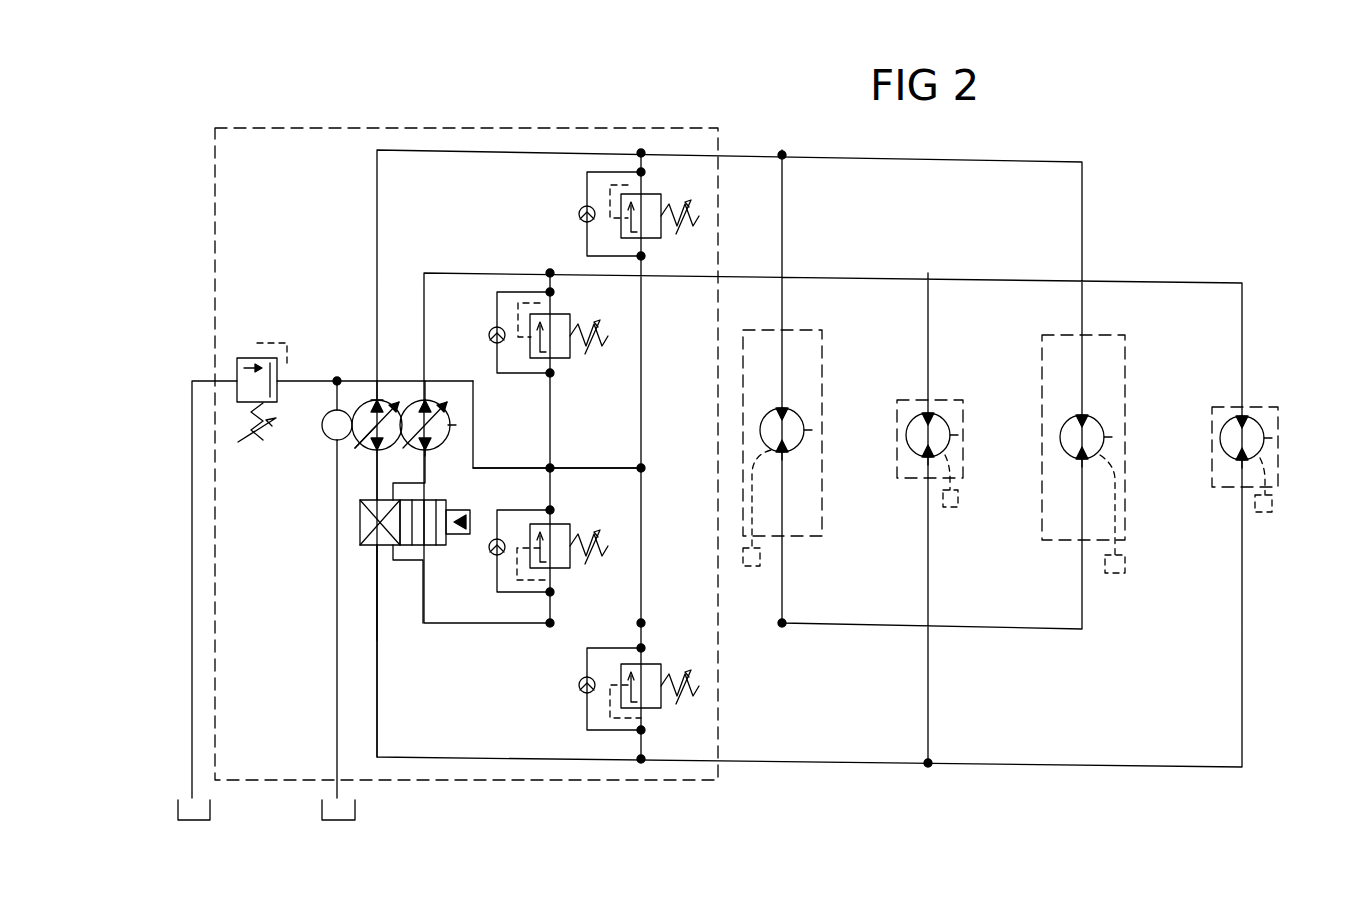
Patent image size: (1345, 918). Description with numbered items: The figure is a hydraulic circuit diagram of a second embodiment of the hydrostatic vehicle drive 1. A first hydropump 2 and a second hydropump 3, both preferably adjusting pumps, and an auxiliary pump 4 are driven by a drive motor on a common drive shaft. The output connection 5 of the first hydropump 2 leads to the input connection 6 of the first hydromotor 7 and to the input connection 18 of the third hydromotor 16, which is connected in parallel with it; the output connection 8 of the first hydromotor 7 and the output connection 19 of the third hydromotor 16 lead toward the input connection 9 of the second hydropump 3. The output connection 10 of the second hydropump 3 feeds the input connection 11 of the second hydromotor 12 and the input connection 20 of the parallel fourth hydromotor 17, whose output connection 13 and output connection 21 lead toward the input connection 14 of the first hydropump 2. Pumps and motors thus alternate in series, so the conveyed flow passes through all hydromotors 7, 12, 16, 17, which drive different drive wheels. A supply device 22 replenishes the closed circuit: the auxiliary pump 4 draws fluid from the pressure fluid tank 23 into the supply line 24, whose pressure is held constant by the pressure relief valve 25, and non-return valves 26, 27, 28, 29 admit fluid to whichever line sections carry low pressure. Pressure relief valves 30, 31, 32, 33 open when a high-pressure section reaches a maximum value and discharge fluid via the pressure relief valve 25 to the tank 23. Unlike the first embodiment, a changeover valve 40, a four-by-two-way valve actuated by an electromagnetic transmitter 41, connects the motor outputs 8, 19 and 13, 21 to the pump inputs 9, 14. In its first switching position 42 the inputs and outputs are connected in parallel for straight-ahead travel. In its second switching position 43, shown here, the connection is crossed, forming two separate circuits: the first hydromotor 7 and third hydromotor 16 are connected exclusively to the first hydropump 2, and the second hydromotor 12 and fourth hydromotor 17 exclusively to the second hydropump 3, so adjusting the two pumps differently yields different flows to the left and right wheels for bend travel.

The hydraulic drive system 1 is at (1140, 210).
The first hydropump 2 is at (375, 400).
The second hydropump 3 is at (452, 425).
The auxiliary pump 4 is at (337, 408).
The output connection of the first hydropump 5 is at (378, 405).
The input connection of the first hydromotor 6 is at (786, 410).
The first hydromotor 7 is at (805, 432).
The output connection of the first hydromotor 8 is at (786, 452).
The input connection of the second hydropump 9 is at (427, 455).
The output connection of the second hydropump 10 is at (425, 400).
The input connection of the second hydromotor 11 is at (928, 412).
The second hydromotor 12 is at (950, 437).
The output connection of the second hydromotor 13 is at (930, 458).
The input connection of the first hydropump 14 is at (357, 450).
The third hydromotor 16 is at (1105, 438).
The fourth hydromotor 17 is at (1265, 438).
The input connection of the third hydromotor 18 is at (1086, 415).
The output connection of the third hydromotor 19 is at (1086, 460).
The input connection of the fourth hydromotor 20 is at (1242, 415).
The output connection of the fourth hydromotor 21 is at (1244, 460).
The supply device 22 is at (252, 485).
The pressure fluid tank 23 is at (193, 825).
The supply line 24 is at (577, 466).
The pressure relief valve 25 is at (237, 375).
The non-return valve 26 is at (495, 327).
The non-return valve 27 is at (497, 556).
The non-return valve 28 is at (578, 214).
The non-return valve 29 is at (578, 686).
The pressure relief valve 30 is at (560, 362).
The pressure relief valve 31 is at (560, 572).
The pressure relief valve 32 is at (655, 195).
The pressure relief valve 33 is at (650, 708).
The changeover valve 40 is at (368, 572).
The electromagnetic transmitter 41 is at (457, 535).
The first switching position 42 is at (420, 545).
The second switching position 43 is at (381, 628).